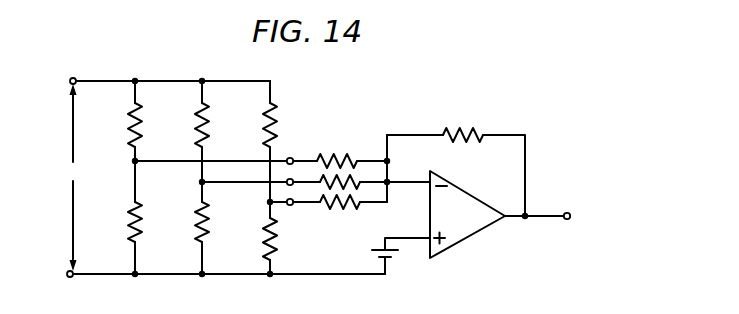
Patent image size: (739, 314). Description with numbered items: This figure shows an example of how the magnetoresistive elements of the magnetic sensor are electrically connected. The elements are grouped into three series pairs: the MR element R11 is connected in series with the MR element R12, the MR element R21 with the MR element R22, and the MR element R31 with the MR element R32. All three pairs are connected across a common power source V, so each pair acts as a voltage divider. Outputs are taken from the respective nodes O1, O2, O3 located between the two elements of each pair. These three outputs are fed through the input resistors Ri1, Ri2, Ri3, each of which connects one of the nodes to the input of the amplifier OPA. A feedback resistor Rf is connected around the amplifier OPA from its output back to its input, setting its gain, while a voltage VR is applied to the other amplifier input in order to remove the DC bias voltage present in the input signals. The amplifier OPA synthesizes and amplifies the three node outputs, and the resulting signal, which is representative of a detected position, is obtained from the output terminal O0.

The power source V is at (72, 177).
The MR element R11 is at (119, 121).
The MR element R21 is at (185, 131).
The MR element R31 is at (254, 154).
The MR element R12 is at (119, 239).
The MR element R22 is at (185, 239).
The MR element R32 is at (253, 245).
The node O1 is at (290, 157).
The node O2 is at (292, 178).
The node O3 is at (291, 207).
The input resistor Ri1 is at (351, 158).
The input resistor Ri2 is at (316, 176).
The input resistor Ri3 is at (335, 210).
The feedback resistor Rf is at (463, 124).
The amplifier OPA is at (469, 238).
The output terminal O0 is at (566, 220).
The voltage VR is at (393, 259).